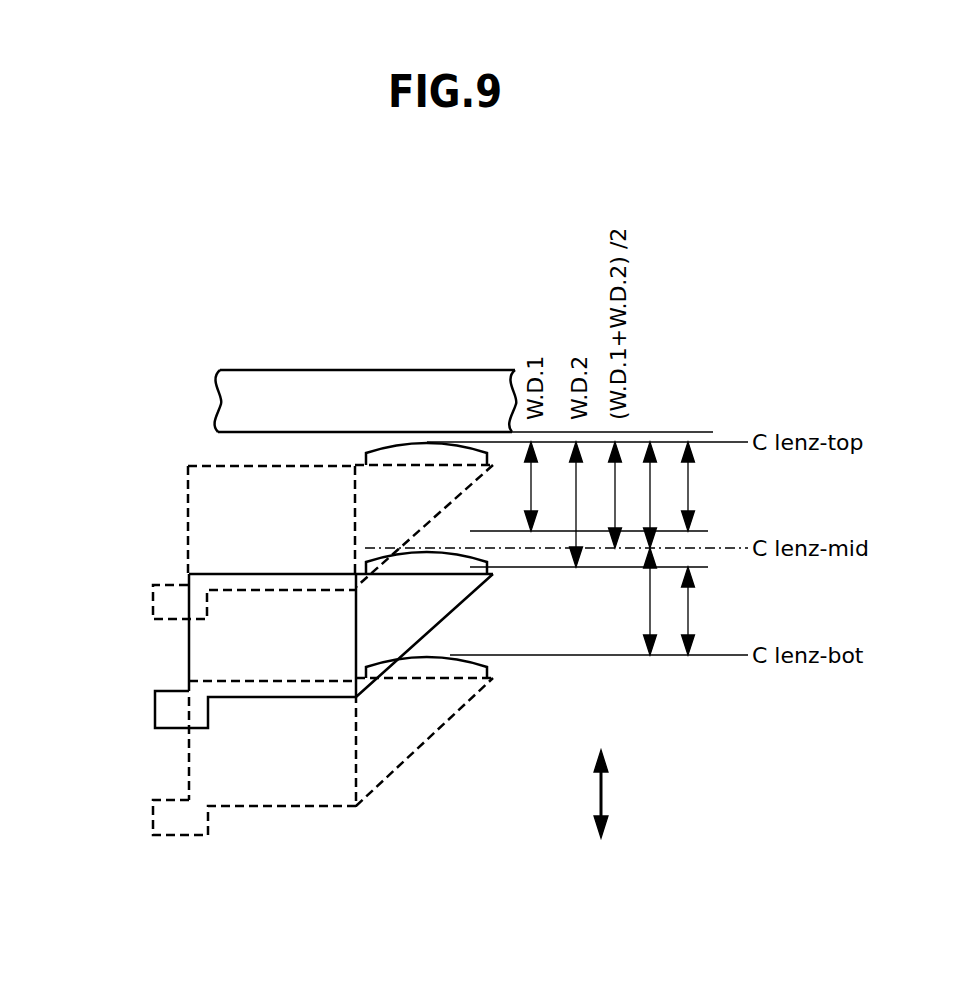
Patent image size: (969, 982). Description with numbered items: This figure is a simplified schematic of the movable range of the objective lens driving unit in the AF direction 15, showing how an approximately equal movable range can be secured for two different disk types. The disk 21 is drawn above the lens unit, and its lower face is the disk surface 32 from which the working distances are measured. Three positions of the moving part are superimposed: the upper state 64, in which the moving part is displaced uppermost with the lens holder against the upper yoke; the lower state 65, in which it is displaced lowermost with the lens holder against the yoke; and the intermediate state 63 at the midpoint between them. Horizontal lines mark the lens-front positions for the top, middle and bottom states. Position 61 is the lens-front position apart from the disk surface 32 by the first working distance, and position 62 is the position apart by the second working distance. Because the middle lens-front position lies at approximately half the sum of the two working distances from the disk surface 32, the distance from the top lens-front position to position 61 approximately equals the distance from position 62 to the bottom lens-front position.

The substrate 21 is at (362, 385).
The disk surface 32 is at (626, 429).
The position of C lenz for W.D.1 61 is at (603, 532).
The position of C lenz for W.D.2 62 is at (603, 573).
The intermediate state 63 is at (189, 643).
The upper state 64 is at (188, 500).
The lower state 65 is at (189, 755).
The AF direction 15 is at (617, 794).